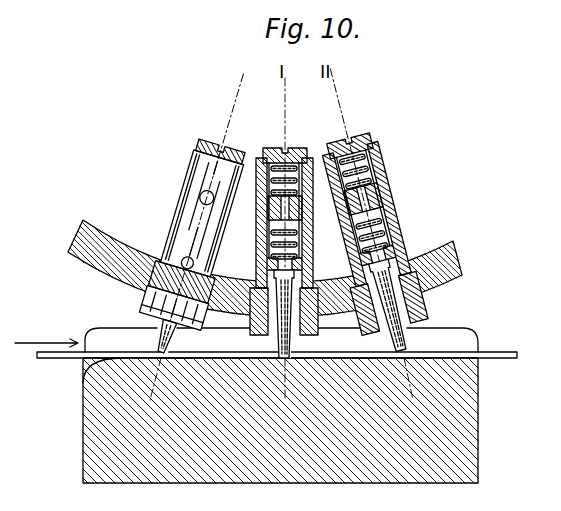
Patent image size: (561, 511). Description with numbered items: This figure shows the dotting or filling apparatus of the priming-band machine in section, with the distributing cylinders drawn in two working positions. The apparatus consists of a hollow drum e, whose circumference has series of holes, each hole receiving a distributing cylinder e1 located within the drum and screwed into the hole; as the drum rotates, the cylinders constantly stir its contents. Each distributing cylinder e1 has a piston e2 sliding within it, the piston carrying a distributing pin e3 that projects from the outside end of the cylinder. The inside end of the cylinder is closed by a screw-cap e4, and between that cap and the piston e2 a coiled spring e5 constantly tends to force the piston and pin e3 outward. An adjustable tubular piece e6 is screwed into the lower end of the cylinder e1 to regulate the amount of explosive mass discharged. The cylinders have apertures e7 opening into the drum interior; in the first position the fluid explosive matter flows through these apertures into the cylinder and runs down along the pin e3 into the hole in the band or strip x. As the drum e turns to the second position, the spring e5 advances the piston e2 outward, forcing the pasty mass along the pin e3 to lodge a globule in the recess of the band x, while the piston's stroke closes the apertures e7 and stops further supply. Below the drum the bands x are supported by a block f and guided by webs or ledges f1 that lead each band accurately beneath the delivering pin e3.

The hollow drum e is at (83, 230).
The distributing cylinder e1 is at (193, 162).
The piston e2 is at (302, 230).
The distributing pin e3 is at (453, 318).
The screw-cap e4 is at (220, 140).
The coiled spring e5 is at (405, 196).
The adjustable tubular piece e6 is at (298, 343).
The apertures e7 is at (257, 276).
The block f is at (470, 415).
The webs or ledges f1 is at (478, 347).
The sheet x is at (55, 356).